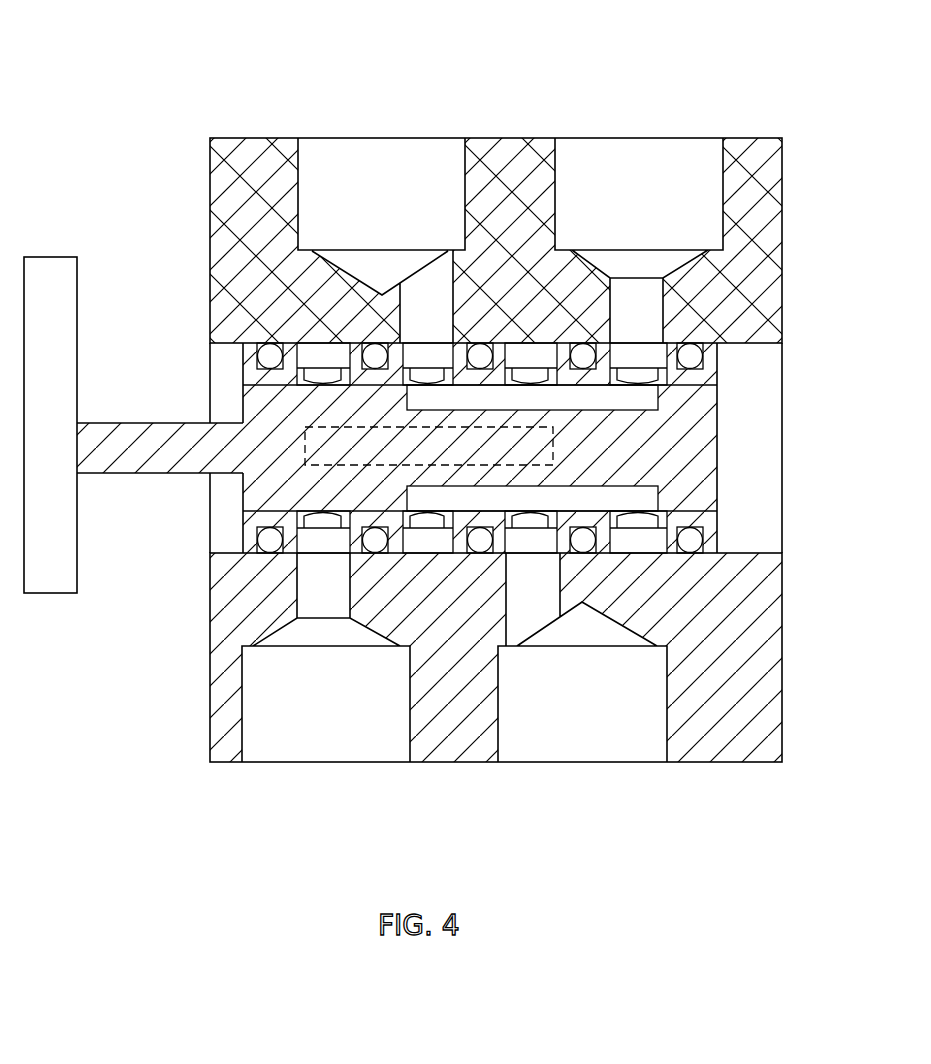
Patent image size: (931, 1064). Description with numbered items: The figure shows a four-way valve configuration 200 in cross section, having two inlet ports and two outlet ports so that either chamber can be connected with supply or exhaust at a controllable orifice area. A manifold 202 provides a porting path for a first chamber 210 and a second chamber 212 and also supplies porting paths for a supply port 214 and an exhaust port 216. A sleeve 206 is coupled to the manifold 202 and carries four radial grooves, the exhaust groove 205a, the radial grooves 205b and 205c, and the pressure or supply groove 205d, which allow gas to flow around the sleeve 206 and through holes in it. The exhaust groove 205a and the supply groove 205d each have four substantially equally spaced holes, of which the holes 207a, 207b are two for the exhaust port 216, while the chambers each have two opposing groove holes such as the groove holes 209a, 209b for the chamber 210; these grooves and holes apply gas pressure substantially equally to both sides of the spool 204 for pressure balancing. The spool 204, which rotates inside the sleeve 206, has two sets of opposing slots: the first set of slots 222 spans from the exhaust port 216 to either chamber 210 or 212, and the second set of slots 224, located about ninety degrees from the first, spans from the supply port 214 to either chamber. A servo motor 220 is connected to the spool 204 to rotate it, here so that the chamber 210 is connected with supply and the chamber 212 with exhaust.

The 4-way valve configuration 200 is at (733, 98).
The manifold 202 is at (747, 285).
The spool 204 is at (258, 472).
The exhaust groove 205a is at (318, 347).
The radial groove 205b is at (432, 347).
The radial groove 205c is at (510, 347).
The pressure (supply) groove 205d is at (648, 347).
The sleeve 206 is at (700, 370).
The hole 207a is at (298, 355).
The hole 207b is at (272, 553).
The groove hole 209a is at (431, 365).
The groove hole 209b is at (430, 525).
The chamber 210 is at (404, 194).
The chamber 212 is at (607, 722).
The supply port 214 is at (662, 194).
The exhaust port 216 is at (342, 719).
The servo motor 220 is at (67, 434).
The first set of slots 222 is at (243, 553).
The second set of slots 224 is at (657, 502).